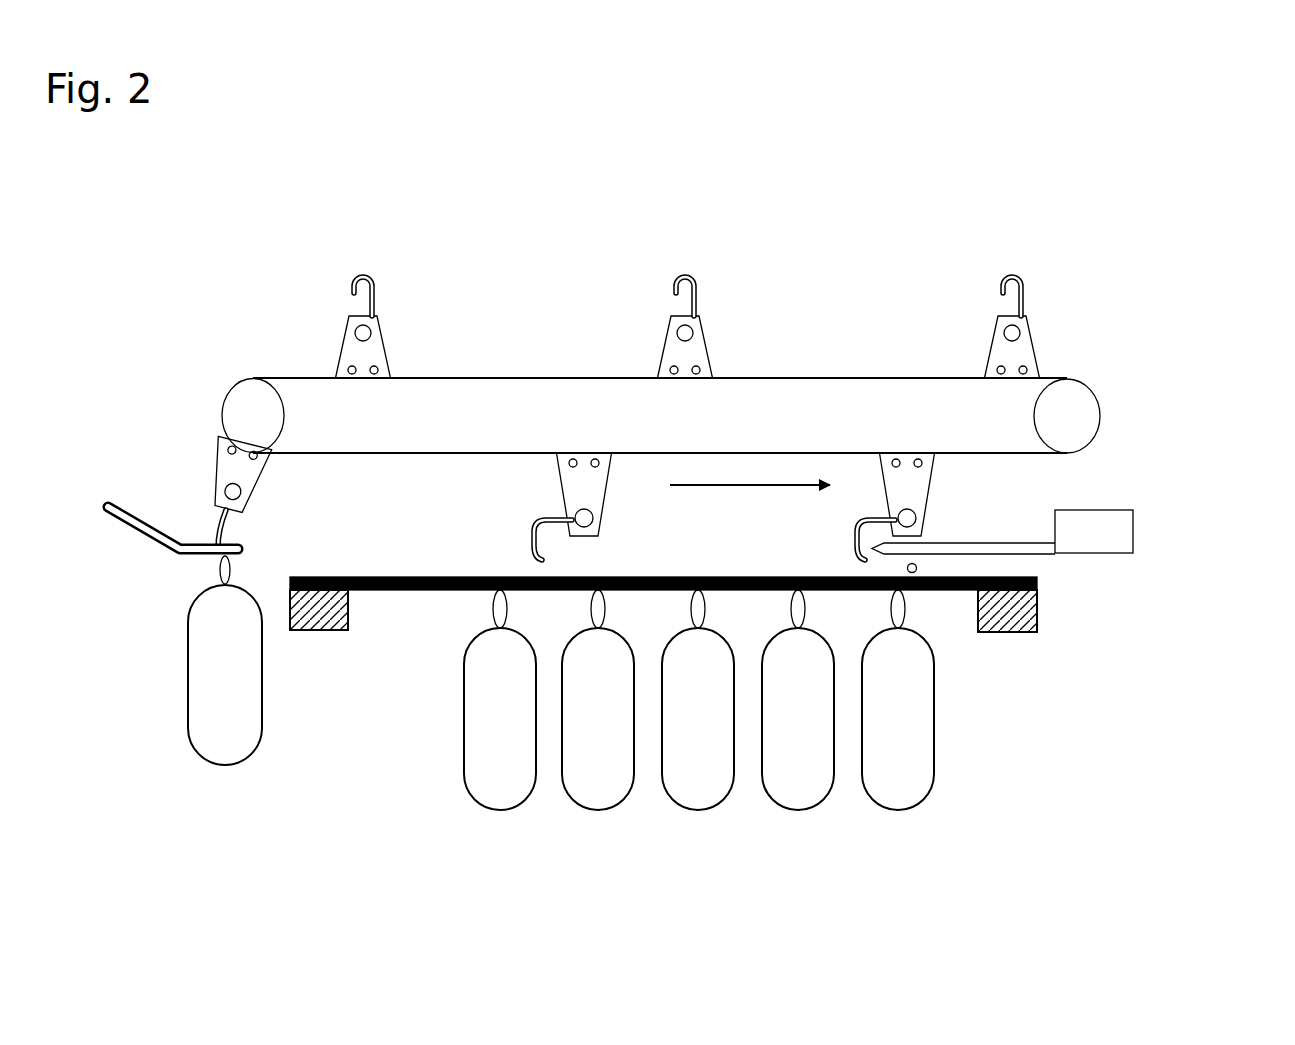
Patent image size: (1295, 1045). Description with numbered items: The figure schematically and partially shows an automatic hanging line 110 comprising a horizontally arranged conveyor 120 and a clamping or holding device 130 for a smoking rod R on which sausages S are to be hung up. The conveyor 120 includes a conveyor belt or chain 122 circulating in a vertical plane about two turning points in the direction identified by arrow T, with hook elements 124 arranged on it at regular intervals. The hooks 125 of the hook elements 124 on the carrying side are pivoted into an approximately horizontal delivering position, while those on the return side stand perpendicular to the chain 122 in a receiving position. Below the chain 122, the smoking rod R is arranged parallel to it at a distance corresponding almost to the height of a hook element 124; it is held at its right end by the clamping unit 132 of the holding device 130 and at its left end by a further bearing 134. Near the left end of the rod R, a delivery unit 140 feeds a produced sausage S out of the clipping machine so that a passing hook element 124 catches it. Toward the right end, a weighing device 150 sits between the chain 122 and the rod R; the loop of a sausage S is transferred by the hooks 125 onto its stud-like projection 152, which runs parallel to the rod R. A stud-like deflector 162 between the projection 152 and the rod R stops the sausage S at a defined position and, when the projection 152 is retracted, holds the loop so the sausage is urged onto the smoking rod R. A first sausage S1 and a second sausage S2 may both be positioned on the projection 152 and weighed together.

The automatic hanging line 110 is at (843, 200).
The conveyor 120 is at (520, 340).
The conveyor belt or chain 122 is at (785, 378).
The hook element 124 is at (340, 322).
The hook 125 is at (362, 262).
The clamping device (holding device) 130 is at (1065, 627).
The clamping unit 132 is at (1012, 635).
The bearing 134 is at (318, 632).
The delivery unit 140 is at (148, 520).
The weighing device 150 is at (1158, 533).
The stud-like projection 152 is at (978, 545).
The deflector 162 is at (917, 573).
The direction arrow T is at (750, 487).
The smoking rod R is at (425, 592).
The sausage S is at (500, 748).
The first sausage S1 is at (897, 790).
The second sausage S2 is at (793, 790).